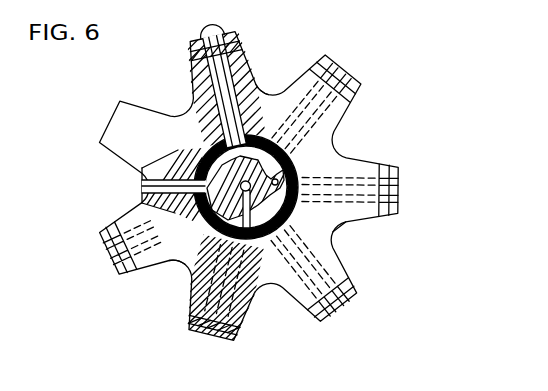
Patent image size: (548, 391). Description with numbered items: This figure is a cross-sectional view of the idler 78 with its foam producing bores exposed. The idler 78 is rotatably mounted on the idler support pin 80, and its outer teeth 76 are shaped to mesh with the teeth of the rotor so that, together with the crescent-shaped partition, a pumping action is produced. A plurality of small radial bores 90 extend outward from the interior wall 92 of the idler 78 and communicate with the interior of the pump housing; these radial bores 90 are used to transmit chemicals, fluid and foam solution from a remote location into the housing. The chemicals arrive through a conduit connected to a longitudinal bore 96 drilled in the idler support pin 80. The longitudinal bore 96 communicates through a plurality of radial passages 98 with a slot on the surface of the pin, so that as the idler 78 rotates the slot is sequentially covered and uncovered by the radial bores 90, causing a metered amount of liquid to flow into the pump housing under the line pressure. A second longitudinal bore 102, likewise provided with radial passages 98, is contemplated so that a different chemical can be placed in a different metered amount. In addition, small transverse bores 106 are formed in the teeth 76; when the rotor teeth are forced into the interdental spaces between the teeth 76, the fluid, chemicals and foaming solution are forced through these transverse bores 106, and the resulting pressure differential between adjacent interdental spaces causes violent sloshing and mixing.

The teeth 76 is at (329, 56).
The idler 78 is at (327, 117).
The idler support pin 80 is at (258, 82).
The radial bores 90 is at (213, 29).
The interior wall 92 is at (336, 137).
The longitudinal bore 96 is at (143, 191).
The radial passages 98 is at (173, 259).
The second longitudinal bore 102 is at (346, 158).
The transverse bores 106 is at (192, 62).